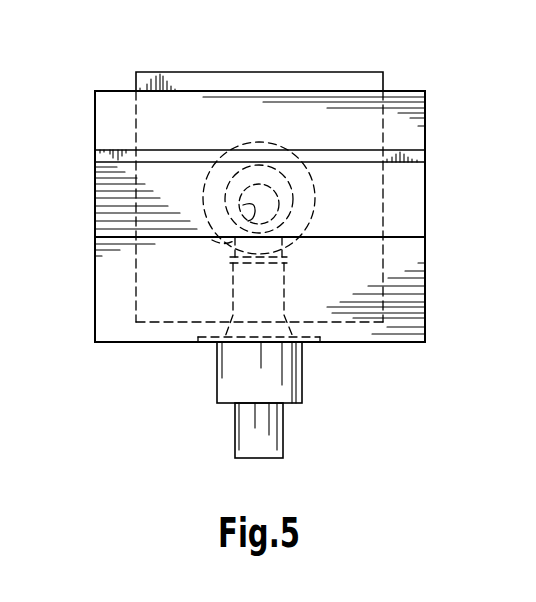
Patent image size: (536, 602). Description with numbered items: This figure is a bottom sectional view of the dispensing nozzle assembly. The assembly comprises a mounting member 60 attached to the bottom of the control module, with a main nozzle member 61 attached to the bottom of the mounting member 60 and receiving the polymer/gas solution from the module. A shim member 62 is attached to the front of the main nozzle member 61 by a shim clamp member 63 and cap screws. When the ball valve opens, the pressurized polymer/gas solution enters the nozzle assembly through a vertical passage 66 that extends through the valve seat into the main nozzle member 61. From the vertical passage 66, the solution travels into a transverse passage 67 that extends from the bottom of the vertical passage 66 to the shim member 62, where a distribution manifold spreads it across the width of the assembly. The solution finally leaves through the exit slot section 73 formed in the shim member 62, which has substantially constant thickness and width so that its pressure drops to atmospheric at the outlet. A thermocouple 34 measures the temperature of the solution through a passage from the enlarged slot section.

The thermocouple 34 is at (292, 375).
The mounting member 60 is at (303, 82).
The main nozzle member 61 is at (108, 265).
The shim member 62 is at (102, 157).
The shim clamp member 63 is at (108, 123).
The vertical passage 66 is at (212, 233).
The transverse passage 67 is at (275, 180).
The exit slot section 73 is at (193, 152).